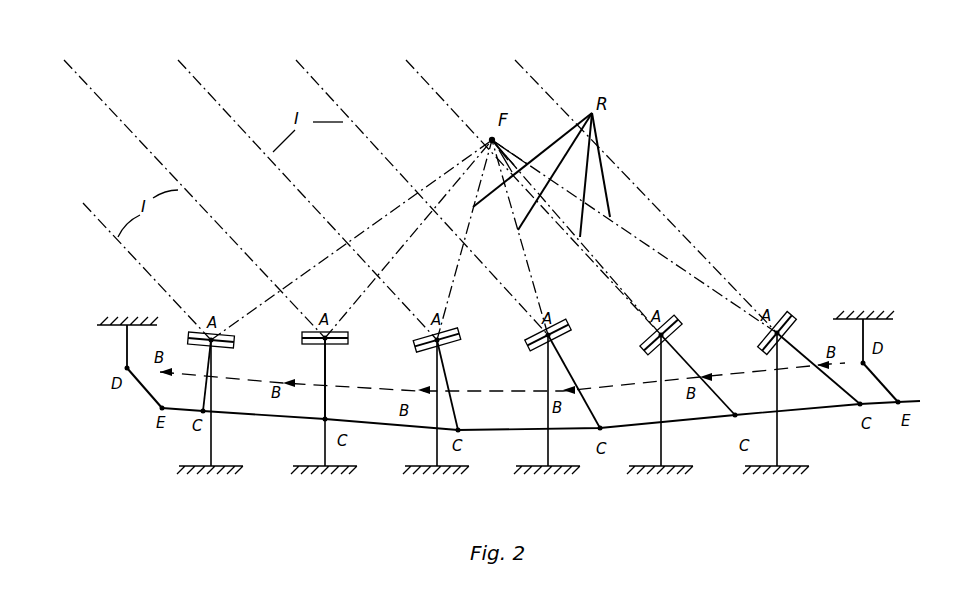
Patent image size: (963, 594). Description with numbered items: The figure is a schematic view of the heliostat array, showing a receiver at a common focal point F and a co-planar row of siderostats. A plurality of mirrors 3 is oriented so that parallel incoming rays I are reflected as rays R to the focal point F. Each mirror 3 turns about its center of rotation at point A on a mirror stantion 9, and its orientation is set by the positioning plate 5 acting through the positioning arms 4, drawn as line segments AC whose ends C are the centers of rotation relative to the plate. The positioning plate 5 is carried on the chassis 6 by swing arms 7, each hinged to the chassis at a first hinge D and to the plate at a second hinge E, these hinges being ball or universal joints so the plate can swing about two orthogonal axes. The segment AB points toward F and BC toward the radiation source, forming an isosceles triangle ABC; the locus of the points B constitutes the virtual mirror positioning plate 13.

The mirrors 3 is at (570, 317).
The positioning arms 4 is at (450, 380).
The positioning plate 5 is at (812, 415).
The chassis 6 is at (117, 342).
The swing arms 7 is at (140, 392).
The mirror stantions 9 is at (320, 440).
The virtual mirror positioning plate 13 is at (368, 382).